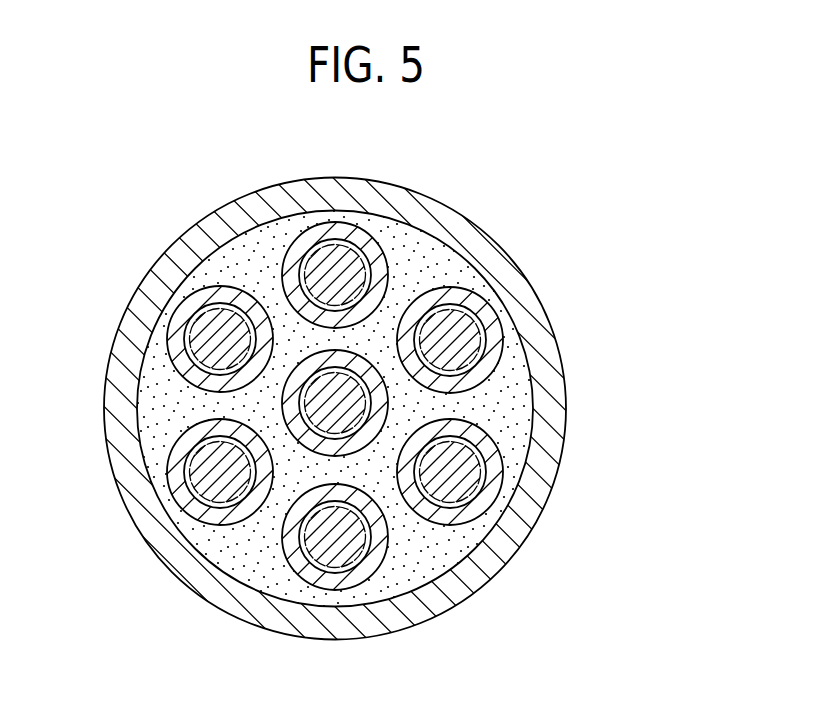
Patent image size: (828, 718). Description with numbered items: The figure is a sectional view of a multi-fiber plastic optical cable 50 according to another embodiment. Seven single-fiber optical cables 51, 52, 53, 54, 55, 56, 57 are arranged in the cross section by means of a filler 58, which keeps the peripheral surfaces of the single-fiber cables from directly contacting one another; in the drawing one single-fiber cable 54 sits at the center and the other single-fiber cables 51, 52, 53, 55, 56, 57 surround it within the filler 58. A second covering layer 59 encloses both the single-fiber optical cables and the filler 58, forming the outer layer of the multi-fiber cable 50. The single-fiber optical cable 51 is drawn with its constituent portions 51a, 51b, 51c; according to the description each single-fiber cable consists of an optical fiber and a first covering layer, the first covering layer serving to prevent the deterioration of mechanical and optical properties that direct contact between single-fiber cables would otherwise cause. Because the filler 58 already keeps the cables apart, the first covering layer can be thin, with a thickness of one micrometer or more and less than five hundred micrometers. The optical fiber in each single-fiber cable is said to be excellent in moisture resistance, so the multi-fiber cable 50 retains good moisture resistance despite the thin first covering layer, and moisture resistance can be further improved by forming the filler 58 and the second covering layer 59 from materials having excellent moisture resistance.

The multi-fiber plastic optical cable 50 is at (552, 222).
The single-fiber optical cable 51 is at (174, 265).
The conductor core 51a is at (217, 327).
The shield layer 51b is at (220, 305).
The insulating sheath 51c is at (177, 335).
The single-fiber optical cable 52 is at (200, 512).
The single-fiber optical cable 53 is at (333, 263).
The single-fiber optical cable 54 is at (352, 395).
The single-fiber optical cable 55 is at (325, 543).
The single-fiber optical cable 56 is at (467, 340).
The single-fiber optical cable 57 is at (460, 490).
The filler 58 is at (513, 400).
The second covering layer 59 is at (528, 498).